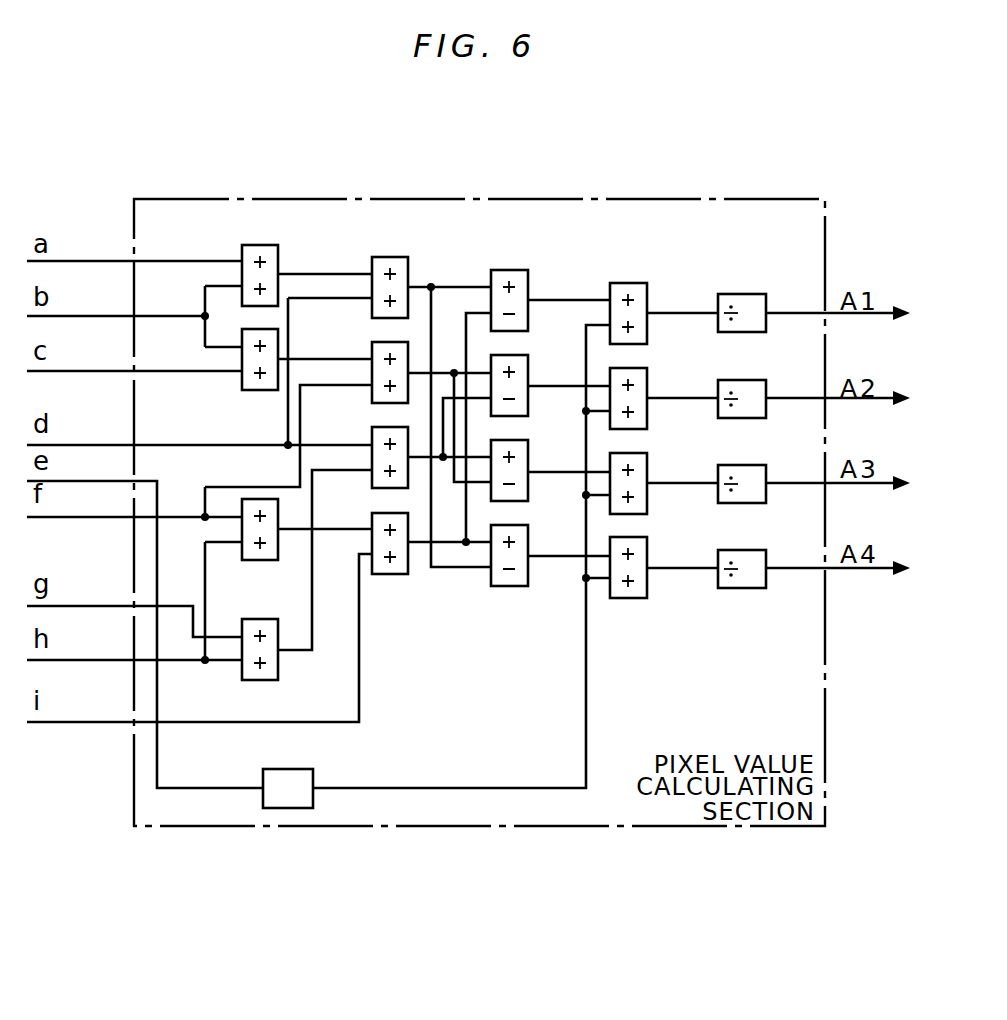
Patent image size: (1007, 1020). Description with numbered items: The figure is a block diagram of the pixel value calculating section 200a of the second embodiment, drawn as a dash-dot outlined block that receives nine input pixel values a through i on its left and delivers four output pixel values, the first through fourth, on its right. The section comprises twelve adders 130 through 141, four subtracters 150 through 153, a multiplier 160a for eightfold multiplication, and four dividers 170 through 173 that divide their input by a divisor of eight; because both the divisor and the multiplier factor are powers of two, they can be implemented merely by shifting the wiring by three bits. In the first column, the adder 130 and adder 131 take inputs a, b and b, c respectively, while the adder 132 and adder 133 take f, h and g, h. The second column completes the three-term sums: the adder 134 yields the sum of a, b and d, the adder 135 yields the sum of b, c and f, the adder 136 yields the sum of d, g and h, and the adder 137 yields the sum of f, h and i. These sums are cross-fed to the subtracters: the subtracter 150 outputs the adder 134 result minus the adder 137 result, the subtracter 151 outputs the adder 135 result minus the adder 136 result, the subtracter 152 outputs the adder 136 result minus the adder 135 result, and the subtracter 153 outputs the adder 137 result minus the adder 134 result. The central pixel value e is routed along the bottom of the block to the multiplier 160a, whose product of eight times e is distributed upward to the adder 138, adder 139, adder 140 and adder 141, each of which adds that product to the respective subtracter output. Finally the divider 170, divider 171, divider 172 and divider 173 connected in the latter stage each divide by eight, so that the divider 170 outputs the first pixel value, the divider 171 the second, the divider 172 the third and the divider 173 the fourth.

The adder 130 is at (268, 245).
The adder 131 is at (240, 378).
The adder 132 is at (258, 560).
The adder 133 is at (275, 680).
The adder 134 is at (376, 257).
The adder 135 is at (380, 342).
The adder 136 is at (380, 427).
The adder 137 is at (382, 513).
The adder 138 is at (630, 283).
The adder 139 is at (630, 368).
The adder 140 is at (630, 453).
The adder 141 is at (630, 537).
The subtracter 150 is at (500, 270).
The subtracter 151 is at (510, 355).
The subtracter 152 is at (510, 440).
The subtracter 153 is at (505, 586).
The multiplier 160a is at (300, 769).
The divider 170 is at (745, 294).
The divider 171 is at (745, 380).
The divider 172 is at (745, 465).
The divider 173 is at (745, 550).
The pixel value calculating section 200a is at (802, 199).